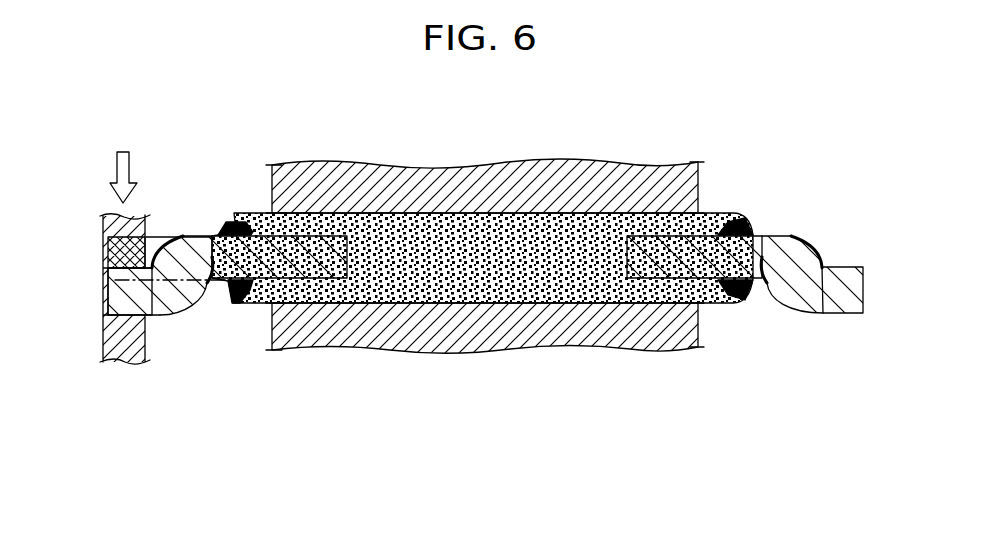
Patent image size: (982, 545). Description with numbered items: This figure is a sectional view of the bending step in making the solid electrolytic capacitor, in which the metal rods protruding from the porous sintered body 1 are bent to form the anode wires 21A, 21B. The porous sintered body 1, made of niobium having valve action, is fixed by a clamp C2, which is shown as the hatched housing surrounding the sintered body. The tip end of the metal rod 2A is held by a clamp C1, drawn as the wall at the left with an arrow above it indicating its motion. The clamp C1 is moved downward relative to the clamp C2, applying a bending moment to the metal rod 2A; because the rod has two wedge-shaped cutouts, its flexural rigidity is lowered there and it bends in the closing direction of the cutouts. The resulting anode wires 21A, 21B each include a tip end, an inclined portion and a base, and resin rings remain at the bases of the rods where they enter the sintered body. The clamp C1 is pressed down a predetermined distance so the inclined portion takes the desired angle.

The porous sintered body 1 is at (462, 212).
The metal rod 2A is at (162, 238).
The anode wire 21A is at (227, 314).
The anode wire 21B is at (745, 324).
The clamp C1 is at (101, 361).
The clamp C2 is at (494, 348).